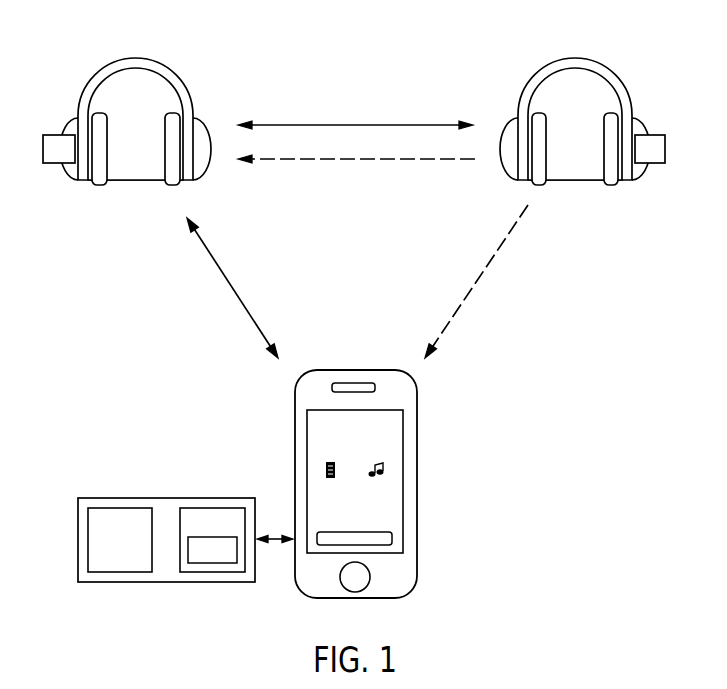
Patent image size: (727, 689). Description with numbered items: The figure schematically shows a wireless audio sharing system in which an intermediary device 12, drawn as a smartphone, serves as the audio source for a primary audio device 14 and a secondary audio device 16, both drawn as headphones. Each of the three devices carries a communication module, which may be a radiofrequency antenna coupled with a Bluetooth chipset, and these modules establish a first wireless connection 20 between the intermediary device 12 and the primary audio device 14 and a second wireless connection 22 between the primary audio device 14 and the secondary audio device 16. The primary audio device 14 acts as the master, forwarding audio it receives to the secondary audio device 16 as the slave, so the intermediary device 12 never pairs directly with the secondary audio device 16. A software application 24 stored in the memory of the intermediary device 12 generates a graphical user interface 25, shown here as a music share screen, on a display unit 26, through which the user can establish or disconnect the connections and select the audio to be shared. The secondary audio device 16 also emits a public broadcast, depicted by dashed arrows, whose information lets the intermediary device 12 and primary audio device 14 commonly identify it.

The intermediary device 12 is at (417, 440).
The primary audio device 14 is at (100, 68).
The secondary audio device 16 is at (548, 68).
The first wireless connection 20 is at (228, 287).
The second wireless connection 22 is at (355, 122).
The software application 24 is at (215, 563).
The graphical user interface 25 is at (315, 445).
The display unit 26 is at (403, 500).